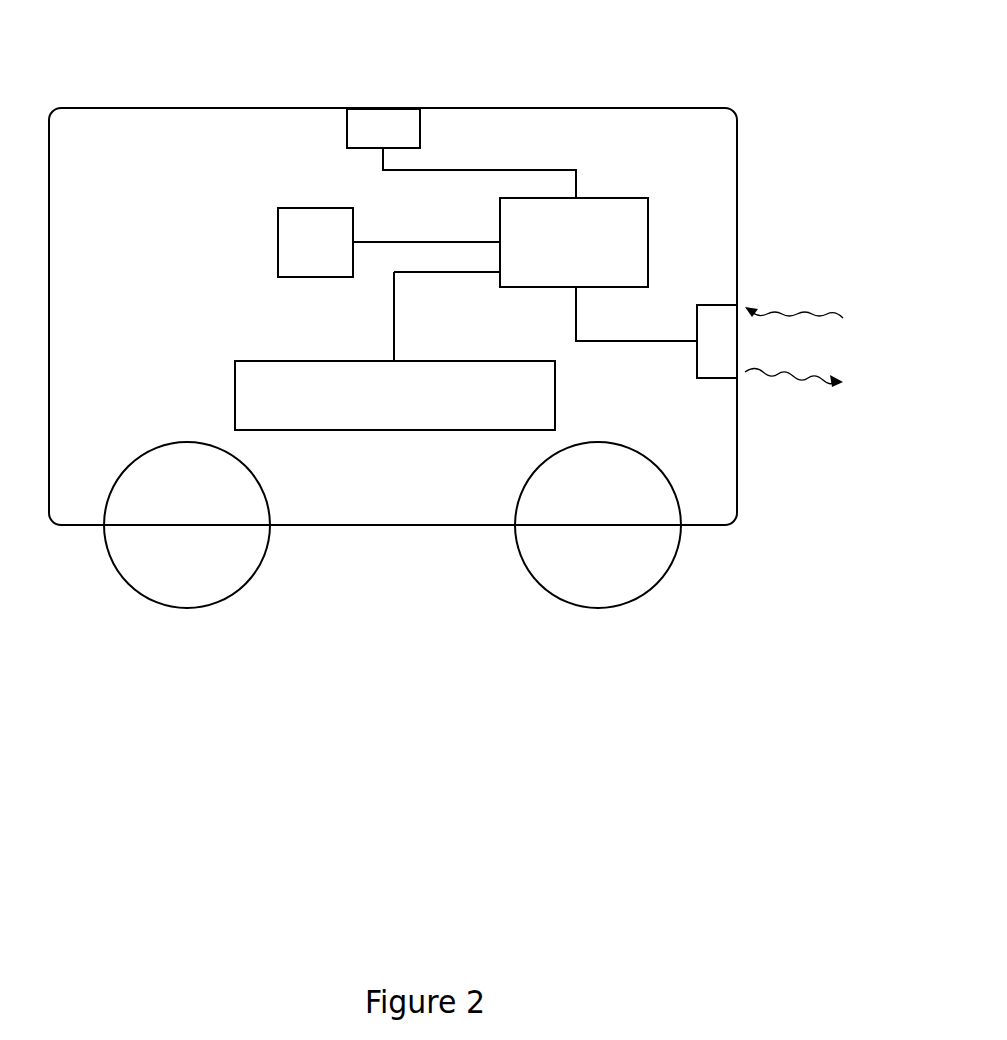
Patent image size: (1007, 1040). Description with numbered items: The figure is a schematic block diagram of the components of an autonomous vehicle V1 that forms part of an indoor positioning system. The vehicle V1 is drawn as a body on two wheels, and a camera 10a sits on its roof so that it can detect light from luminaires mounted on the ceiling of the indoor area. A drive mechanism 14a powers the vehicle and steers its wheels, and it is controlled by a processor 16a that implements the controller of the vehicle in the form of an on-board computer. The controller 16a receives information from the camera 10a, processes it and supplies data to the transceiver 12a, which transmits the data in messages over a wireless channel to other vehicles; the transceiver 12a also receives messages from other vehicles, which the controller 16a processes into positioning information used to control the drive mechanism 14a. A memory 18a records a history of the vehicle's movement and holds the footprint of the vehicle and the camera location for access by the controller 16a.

The vehicle V1 is at (737, 172).
The camera 10a is at (372, 108).
The transceiver 12a is at (745, 340).
The drive mechanism 14a is at (392, 430).
The processor 16a is at (630, 197).
The memory 18a is at (278, 208).